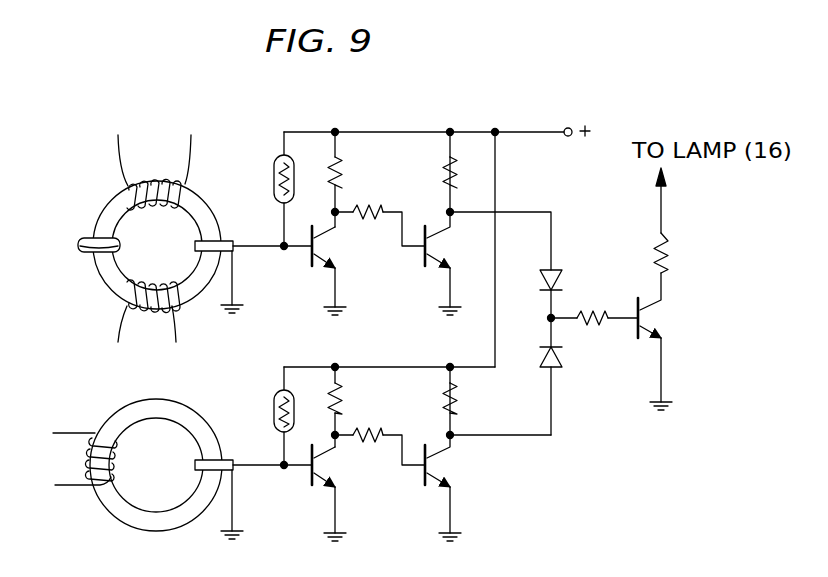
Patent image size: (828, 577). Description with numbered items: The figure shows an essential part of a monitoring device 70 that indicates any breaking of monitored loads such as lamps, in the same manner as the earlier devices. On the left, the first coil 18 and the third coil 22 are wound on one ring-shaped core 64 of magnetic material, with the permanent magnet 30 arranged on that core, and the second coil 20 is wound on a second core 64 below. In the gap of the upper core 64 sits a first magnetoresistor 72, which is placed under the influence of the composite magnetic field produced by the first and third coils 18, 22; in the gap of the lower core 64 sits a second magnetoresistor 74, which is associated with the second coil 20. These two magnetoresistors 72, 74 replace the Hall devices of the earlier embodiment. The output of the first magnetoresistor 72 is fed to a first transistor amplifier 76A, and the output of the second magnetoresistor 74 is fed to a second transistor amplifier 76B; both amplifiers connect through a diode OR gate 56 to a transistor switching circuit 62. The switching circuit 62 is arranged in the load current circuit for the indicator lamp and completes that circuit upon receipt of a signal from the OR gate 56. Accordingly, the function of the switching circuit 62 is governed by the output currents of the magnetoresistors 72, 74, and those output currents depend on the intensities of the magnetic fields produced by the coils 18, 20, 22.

The first coil 18 is at (161, 178).
The third coil 22 is at (150, 313).
The permanent magnet 30 is at (83, 232).
The core 64 is at (98, 278).
The first magnetoresistor 72 is at (229, 243).
The second magnetoresistor 74 is at (232, 460).
The second coil 20 is at (112, 466).
The first transistor amplifier 76A is at (375, 125).
The second transistor amplifier 76B is at (351, 471).
The diode OR gate 56 is at (559, 302).
The transistor switching circuit 62 is at (646, 341).
The monitoring device 70 is at (489, 445).